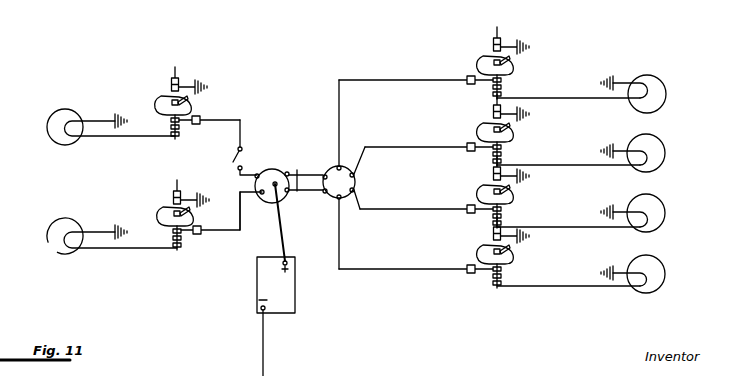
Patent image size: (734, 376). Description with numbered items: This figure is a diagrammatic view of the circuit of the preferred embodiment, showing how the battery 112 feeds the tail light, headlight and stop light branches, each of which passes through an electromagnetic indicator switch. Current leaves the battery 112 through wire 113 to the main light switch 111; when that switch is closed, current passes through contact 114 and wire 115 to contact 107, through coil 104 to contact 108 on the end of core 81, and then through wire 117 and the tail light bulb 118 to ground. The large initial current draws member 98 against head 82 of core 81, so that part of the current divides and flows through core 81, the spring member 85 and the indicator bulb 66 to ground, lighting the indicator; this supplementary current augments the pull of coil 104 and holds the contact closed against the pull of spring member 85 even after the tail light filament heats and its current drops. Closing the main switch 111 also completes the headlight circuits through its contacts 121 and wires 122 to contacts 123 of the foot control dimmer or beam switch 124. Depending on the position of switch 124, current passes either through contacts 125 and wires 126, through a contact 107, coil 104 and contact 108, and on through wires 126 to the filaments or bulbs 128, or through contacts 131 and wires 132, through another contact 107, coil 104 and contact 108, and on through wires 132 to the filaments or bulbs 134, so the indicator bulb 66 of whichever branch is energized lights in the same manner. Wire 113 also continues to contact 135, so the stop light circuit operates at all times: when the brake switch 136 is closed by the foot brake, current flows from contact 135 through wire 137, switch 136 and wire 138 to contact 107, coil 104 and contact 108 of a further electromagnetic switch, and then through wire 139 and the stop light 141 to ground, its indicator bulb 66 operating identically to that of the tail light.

The indicator bulb 66 is at (507, 109).
The core 81 is at (171, 125).
The head of core 82 is at (180, 104).
The spring member 85 is at (160, 98).
The member 98 is at (188, 97).
The coil 104 is at (172, 135).
The contact 107 is at (198, 124).
The contact 108 is at (178, 136).
The main light switch 111 is at (275, 203).
The battery 112 is at (295, 305).
The wire 113 is at (283, 243).
The contact 114 is at (262, 195).
The wire 115 is at (242, 231).
The wire 117 is at (117, 250).
The tail light bulb 118 is at (55, 258).
The contacts of main switch 121 is at (296, 172).
The wires 122 is at (312, 191).
The contacts of dimmer switch 123 is at (329, 172).
The foot control dimmer or beam switch 124 is at (345, 200).
The contacts 125 is at (335, 165).
The wires 126 is at (386, 81).
The filaments or bulbs 128 is at (665, 92).
The contacts 131 is at (356, 182).
The wires 132 is at (420, 208).
The filaments or bulbs 134 is at (665, 150).
The contact 135 is at (242, 178).
The brake switch 136 is at (235, 159).
The wire 137 is at (254, 156).
The wire 138 is at (242, 121).
The wire 139 is at (125, 138).
The stop light 141 is at (53, 145).